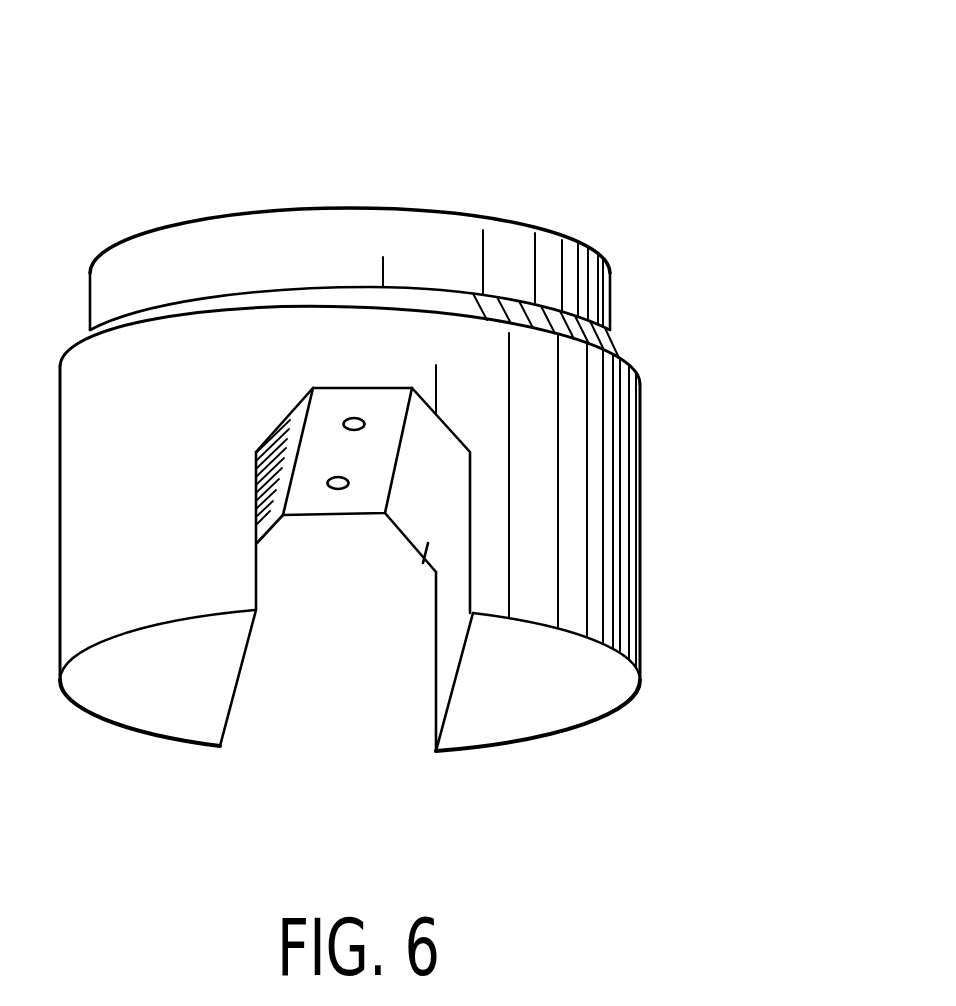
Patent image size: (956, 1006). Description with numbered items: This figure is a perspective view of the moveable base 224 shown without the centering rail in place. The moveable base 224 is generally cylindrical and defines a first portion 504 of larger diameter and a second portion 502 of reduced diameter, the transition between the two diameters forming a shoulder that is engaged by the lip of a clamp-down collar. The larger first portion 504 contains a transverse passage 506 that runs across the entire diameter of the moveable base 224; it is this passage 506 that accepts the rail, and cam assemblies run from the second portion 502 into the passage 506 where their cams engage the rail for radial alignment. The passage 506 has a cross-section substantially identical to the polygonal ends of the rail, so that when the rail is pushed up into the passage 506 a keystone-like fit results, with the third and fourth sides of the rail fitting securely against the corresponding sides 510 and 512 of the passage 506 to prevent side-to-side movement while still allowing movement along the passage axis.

The moveable base 224 is at (684, 166).
The second portion 502 is at (610, 298).
The first portion 504 is at (642, 521).
The transverse passage 506 is at (337, 710).
The side of passage 510 is at (273, 518).
The side of passage 512 is at (470, 453).